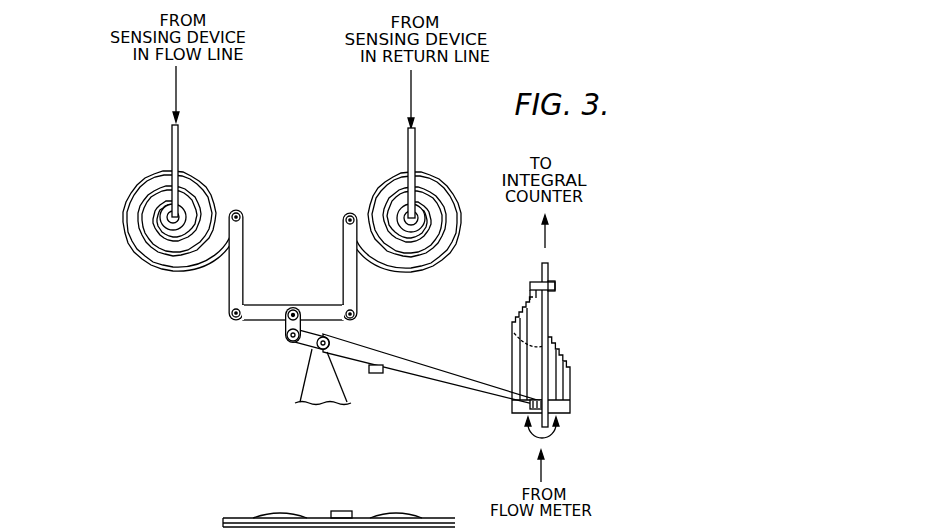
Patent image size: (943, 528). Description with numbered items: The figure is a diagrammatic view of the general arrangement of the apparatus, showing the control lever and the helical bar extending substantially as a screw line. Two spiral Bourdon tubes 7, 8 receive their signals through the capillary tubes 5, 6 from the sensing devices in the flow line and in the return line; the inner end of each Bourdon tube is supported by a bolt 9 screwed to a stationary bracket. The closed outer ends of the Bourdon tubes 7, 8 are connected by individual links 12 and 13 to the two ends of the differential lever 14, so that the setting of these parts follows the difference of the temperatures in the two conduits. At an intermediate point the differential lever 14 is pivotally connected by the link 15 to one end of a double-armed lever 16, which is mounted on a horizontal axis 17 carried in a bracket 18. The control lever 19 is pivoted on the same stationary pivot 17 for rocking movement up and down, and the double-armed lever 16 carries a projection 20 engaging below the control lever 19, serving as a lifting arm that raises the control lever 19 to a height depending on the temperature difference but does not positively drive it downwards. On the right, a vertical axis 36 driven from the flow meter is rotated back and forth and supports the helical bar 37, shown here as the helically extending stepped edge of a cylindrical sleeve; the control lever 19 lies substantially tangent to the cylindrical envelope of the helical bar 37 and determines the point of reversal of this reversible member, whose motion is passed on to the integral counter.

The capillary tube 5 is at (173, 133).
The capillary tube 6 is at (410, 138).
The Bourdon tube 7 is at (137, 177).
The Bourdon tube 8 is at (363, 177).
The bolt 9 is at (167, 218).
The link 12 is at (243, 225).
The link 13 is at (343, 230).
The differential lever 14 is at (293, 268).
The link 15 is at (287, 320).
The double-armed lever 16 is at (302, 343).
The horizontal axis 17 is at (332, 346).
The bracket 18 is at (313, 387).
The control lever 19 is at (430, 392).
The projection 20 is at (377, 373).
The vertical axis 36 is at (548, 297).
The helical bar 37 is at (592, 345).